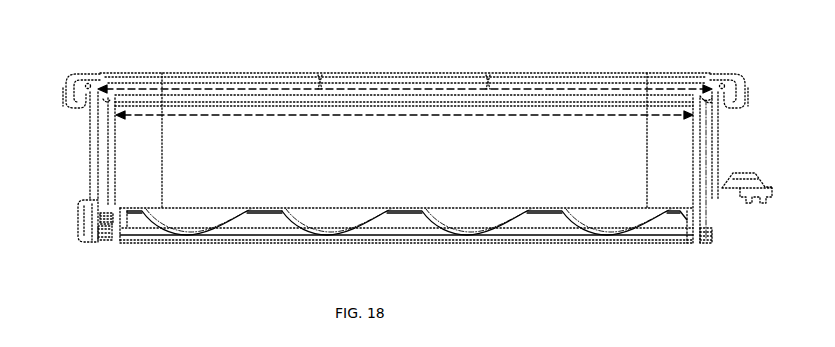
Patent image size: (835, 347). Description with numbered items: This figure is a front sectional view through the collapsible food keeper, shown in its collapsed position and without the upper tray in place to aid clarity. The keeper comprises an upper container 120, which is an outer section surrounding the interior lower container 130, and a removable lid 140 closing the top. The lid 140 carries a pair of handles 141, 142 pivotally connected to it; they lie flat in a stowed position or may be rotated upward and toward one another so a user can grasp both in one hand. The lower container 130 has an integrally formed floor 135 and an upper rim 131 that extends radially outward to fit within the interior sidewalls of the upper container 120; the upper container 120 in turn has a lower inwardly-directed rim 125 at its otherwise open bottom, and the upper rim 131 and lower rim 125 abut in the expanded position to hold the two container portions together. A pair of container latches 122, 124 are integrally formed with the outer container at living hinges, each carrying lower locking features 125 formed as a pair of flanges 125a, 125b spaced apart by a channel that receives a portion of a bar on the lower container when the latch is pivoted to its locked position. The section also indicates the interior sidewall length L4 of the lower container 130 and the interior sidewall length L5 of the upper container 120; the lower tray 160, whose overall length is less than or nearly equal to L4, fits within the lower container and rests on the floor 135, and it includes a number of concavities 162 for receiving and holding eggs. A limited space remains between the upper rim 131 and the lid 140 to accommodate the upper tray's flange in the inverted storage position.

The removable lid 140 is at (587, 73).
The handle 141 is at (743, 90).
The handle 142 is at (66, 80).
The upper rim 131 is at (707, 100).
The upper container 120 is at (90, 138).
The lower container 130 is at (697, 195).
The container latch 122 is at (755, 175).
The container latch 124 is at (80, 222).
The lower locking feature / lower rim 125 is at (707, 240).
The flange 125a is at (103, 218).
The flange 125b is at (100, 235).
The floor 135 is at (547, 237).
The lower tray 160 is at (250, 212).
The concavity 162 is at (323, 213).
The interior sidewall length of lower container L4 is at (404, 124).
The interior sidewall length of upper container L5 is at (173, 90).